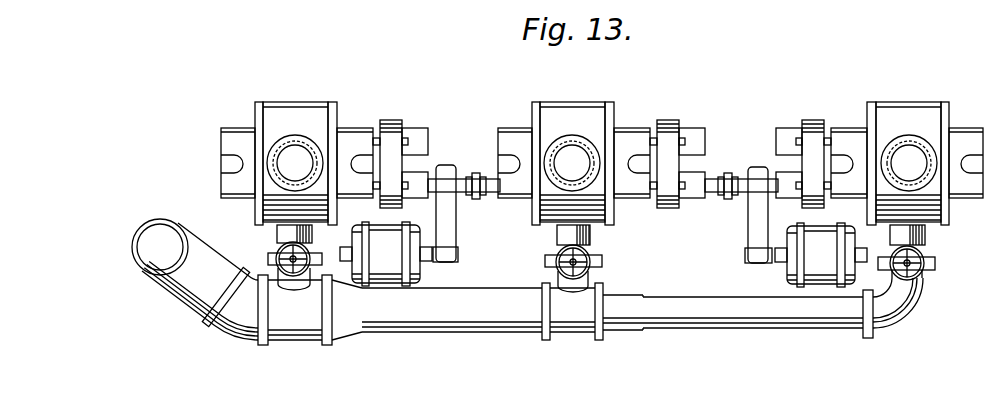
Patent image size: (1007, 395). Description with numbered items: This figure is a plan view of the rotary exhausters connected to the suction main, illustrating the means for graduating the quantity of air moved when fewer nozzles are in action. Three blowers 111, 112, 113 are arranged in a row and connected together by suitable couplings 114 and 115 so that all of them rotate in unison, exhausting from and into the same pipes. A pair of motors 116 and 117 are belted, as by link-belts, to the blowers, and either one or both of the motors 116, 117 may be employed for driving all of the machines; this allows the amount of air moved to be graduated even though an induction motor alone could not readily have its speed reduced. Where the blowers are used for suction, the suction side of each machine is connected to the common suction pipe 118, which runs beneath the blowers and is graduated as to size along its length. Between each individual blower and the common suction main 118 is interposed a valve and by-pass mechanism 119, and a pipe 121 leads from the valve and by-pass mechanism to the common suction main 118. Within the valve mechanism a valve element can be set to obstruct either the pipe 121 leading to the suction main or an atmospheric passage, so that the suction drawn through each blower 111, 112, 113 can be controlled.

The blower 111 is at (275, 117).
The blower 112 is at (555, 115).
The blower 113 is at (893, 122).
The coupling 114 is at (476, 173).
The coupling 115 is at (727, 173).
The motor 116 is at (400, 263).
The motor 117 is at (786, 268).
The common suction pipe 118 is at (155, 242).
The valve and by-pass mechanism 119 is at (270, 257).
The pipe 121 is at (605, 286).